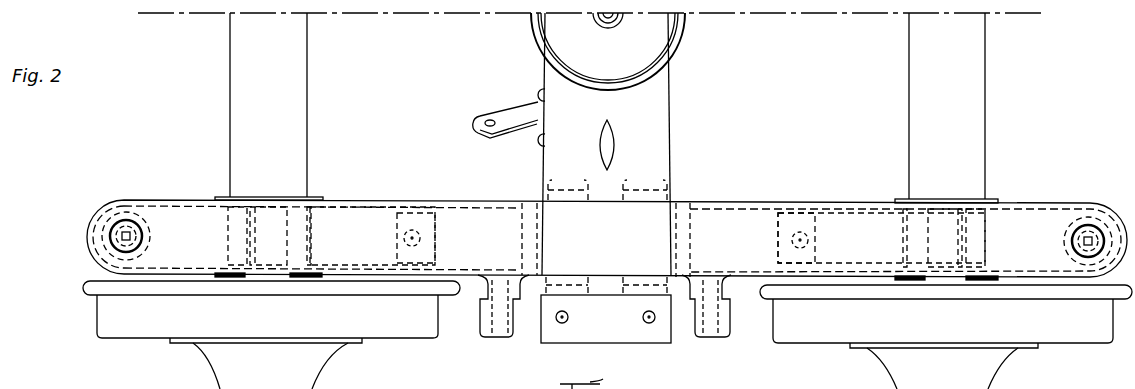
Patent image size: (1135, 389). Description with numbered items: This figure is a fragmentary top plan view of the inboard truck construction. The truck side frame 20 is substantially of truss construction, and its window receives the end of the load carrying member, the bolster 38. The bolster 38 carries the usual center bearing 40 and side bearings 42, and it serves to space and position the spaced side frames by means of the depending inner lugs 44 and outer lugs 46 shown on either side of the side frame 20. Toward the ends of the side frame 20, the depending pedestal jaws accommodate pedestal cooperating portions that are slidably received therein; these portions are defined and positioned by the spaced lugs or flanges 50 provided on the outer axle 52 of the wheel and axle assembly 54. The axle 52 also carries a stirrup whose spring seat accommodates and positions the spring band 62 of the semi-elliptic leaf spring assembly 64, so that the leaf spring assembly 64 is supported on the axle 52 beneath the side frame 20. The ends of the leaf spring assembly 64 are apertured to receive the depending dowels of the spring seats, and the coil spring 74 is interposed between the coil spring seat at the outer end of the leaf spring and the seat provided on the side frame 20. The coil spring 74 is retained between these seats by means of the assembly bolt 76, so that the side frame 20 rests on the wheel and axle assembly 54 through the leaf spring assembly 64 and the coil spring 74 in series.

The truck side frame 20 is at (725, 212).
The bolster 38 is at (658, 117).
The center bearing 40 is at (650, 33).
The side bearings 42 is at (581, 328).
The inner lugs 44 is at (565, 190).
The outer lugs 46 is at (560, 280).
The spaced lugs or flanges 50 is at (224, 197).
The outer axle 52 is at (240, 89).
The wheel and axle assembly 54 is at (131, 332).
The spring band 62 is at (285, 238).
The semi-elliptic leaf spring assembly 64 is at (356, 225).
The coil spring 74 is at (152, 240).
The assembly bolt 76 is at (120, 233).